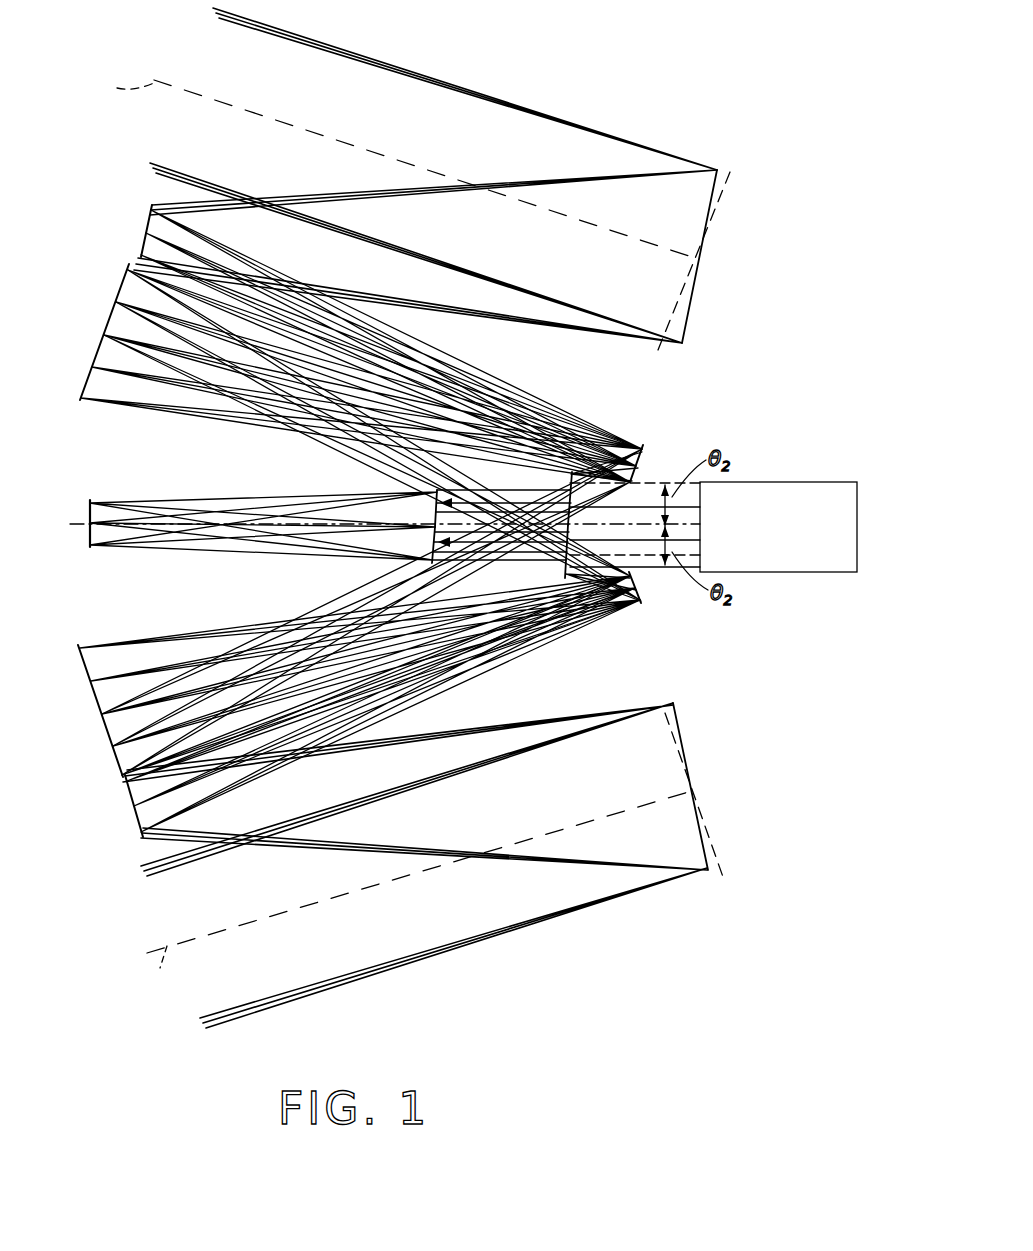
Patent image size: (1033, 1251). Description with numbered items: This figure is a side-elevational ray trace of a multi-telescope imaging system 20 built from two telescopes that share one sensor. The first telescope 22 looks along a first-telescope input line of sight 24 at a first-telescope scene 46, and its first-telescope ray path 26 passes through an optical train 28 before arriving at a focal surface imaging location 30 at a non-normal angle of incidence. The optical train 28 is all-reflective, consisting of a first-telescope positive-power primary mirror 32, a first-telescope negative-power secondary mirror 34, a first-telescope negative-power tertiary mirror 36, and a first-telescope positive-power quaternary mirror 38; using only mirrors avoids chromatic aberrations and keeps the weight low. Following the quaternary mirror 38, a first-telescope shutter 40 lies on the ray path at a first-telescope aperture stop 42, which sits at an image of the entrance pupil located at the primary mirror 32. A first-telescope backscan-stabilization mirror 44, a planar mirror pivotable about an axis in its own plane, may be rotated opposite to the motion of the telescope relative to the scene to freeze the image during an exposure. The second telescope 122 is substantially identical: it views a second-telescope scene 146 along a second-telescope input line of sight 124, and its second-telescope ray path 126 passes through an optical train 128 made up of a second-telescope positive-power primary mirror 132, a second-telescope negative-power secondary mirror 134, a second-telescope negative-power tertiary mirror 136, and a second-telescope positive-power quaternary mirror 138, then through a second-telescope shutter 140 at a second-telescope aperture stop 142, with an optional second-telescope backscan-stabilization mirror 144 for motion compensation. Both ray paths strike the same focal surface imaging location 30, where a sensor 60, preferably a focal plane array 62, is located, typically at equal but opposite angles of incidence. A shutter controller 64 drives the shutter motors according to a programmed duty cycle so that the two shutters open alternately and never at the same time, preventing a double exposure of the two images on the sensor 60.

The multi-telescope imaging system 20 is at (118, 168).
The first telescope 22 is at (688, 311).
The first-telescope input line of sight 24 is at (185, 92).
The first-telescope ray path 26 is at (353, 200).
The optical train 28 is at (540, 398).
The focal surface imaging location 30 is at (66, 505).
The first-telescope positive-power primary mirror 32 is at (725, 185).
The first-telescope negative-power secondary mirror 34 is at (150, 234).
The first-telescope negative-power tertiary mirror 36 is at (642, 456).
The first-telescope positive-power quaternary mirror 38 is at (108, 310).
The first-telescope shutter 40 is at (395, 488).
The first-telescope aperture stop 42 is at (437, 490).
The first-telescope backscan-stabilization mirror 44 is at (630, 486).
The first-telescope scene 46 is at (125, 78).
The sensor 60 is at (91, 544).
The focal plane array 62 is at (90, 500).
The shutter controller 64 is at (815, 482).
The second telescope 122 is at (688, 720).
The second-telescope input line of sight 124 is at (218, 940).
The second-telescope ray path 126 is at (400, 494).
The optical train 128 is at (541, 648).
The second-telescope positive-power primary mirror 132 is at (690, 756).
The second-telescope negative-power secondary mirror 134 is at (127, 806).
The second-telescope negative-power tertiary mirror 136 is at (646, 604).
The second-telescope positive-power quaternary mirror 138 is at (102, 728).
The second-telescope shutter 140 is at (395, 562).
The second-telescope aperture stop 142 is at (432, 565).
The second-telescope backscan-stabilization mirror 144 is at (630, 574).
The second-telescope scene 146 is at (133, 974).